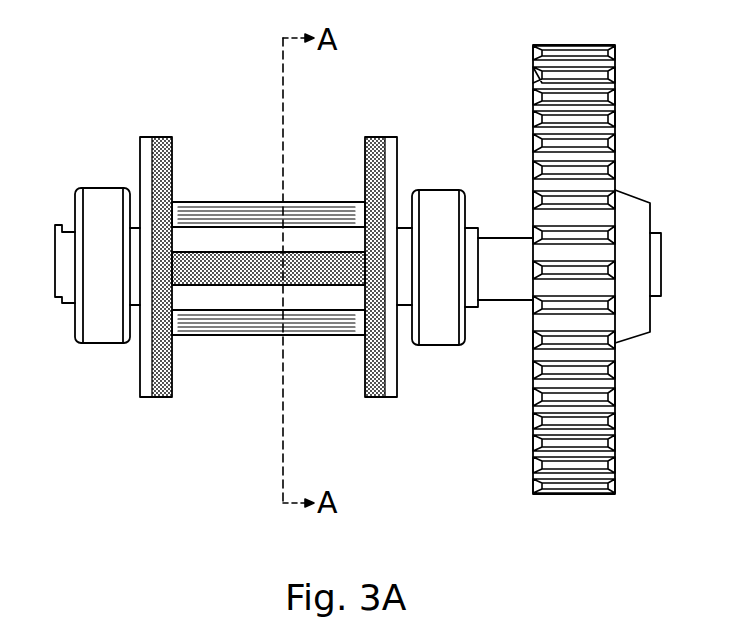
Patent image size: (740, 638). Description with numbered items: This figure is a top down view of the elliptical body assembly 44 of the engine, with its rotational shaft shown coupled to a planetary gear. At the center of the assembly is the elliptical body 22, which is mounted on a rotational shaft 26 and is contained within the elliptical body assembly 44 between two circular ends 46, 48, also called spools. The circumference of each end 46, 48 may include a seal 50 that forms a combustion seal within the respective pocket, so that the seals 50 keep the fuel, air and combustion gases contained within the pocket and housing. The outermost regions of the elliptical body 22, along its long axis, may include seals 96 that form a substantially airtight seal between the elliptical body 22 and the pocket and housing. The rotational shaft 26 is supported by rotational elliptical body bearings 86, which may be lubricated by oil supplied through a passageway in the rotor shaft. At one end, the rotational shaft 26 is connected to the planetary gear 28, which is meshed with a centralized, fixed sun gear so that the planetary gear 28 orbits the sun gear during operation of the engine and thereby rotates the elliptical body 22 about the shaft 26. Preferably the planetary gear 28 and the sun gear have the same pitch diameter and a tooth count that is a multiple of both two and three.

The elliptical body 22 is at (217, 202).
The rotational shaft 26 is at (510, 238).
The planetary gear 28 is at (608, 112).
The elliptical body assembly 44 is at (112, 165).
The circular end 46 is at (387, 137).
The circular end 48 is at (143, 137).
The seal 50 is at (160, 137).
The rotational elliptical body bearing 86 is at (105, 325).
The seal 96 is at (235, 270).